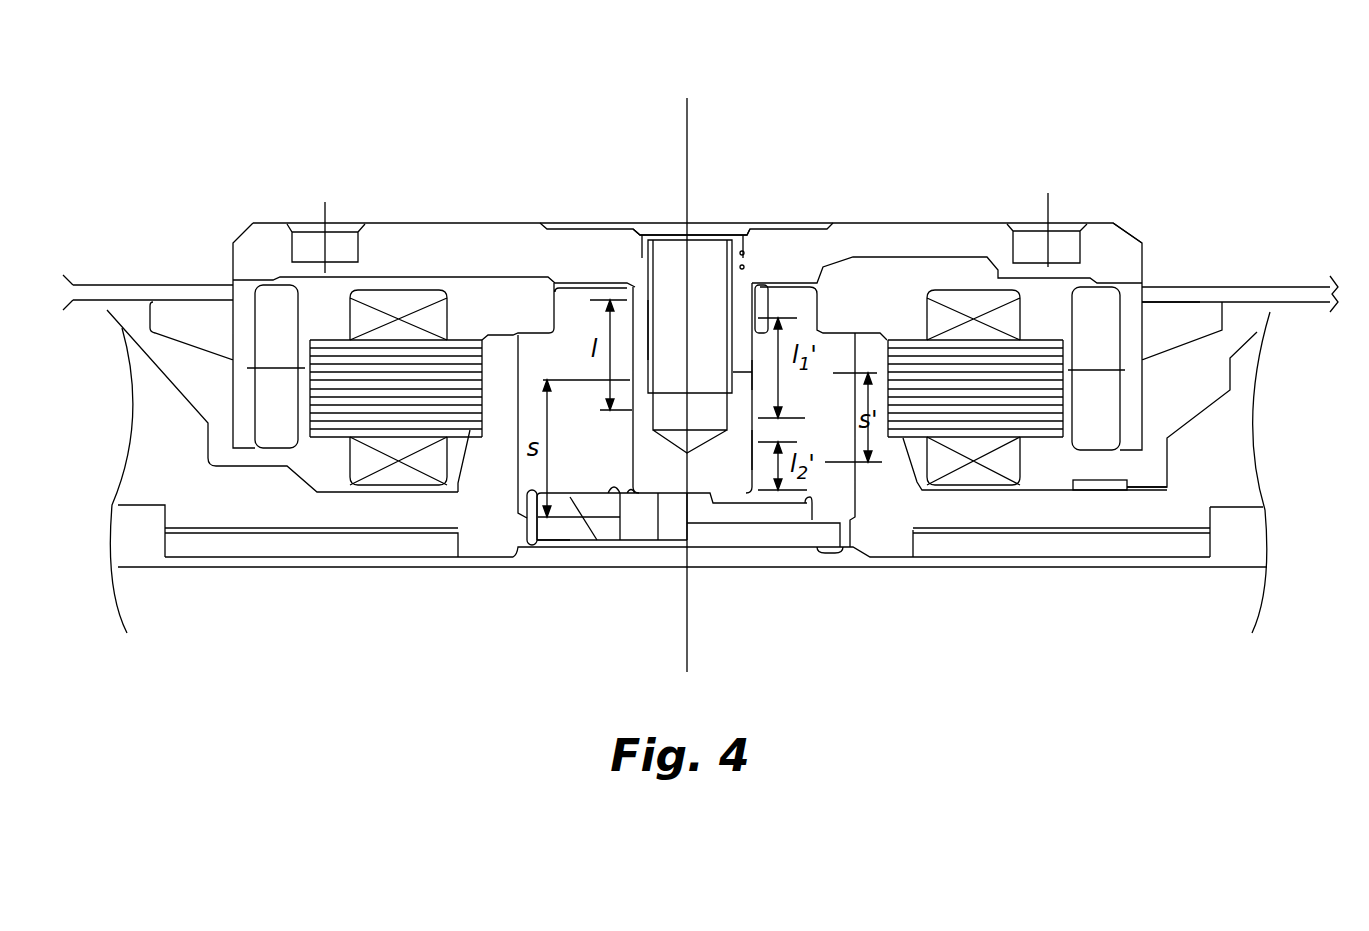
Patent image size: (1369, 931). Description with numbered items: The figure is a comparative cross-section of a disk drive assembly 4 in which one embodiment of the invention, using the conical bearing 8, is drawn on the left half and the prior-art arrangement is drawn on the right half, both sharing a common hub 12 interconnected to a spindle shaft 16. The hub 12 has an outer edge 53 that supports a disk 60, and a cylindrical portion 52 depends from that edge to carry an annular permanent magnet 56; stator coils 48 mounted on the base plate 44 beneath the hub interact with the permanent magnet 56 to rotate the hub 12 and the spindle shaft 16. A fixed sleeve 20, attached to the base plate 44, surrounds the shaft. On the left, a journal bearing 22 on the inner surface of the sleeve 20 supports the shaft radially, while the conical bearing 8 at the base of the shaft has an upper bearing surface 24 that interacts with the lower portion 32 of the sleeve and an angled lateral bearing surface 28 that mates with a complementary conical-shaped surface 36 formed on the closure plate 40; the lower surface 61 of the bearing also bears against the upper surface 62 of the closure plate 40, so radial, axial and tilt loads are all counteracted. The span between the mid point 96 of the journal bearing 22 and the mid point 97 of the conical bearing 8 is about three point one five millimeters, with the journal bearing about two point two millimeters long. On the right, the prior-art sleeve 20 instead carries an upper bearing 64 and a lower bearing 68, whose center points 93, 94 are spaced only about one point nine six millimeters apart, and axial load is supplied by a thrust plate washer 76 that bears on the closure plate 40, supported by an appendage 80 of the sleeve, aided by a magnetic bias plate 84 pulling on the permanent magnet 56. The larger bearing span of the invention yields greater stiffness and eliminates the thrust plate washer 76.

The disk drive assembly 4 is at (356, 116).
The conical bearing 8 is at (610, 527).
The hub 12 is at (265, 237).
The spindle shaft 16 is at (735, 255).
The sleeve 20 is at (535, 430).
The journal bearing 22 is at (672, 336).
The upper bearing surface 24 is at (620, 532).
The lateral bearing surface 28 is at (593, 533).
The lower portion of the sleeve 32 is at (562, 540).
The complementary conical-shaped surface 36 is at (558, 533).
The closure plate 40 is at (557, 541).
The base plate 44 is at (207, 500).
The stator coils 48 is at (340, 408).
The cylindrical portion 52 is at (1128, 297).
The outer edge 53 is at (1142, 255).
The permanent magnet 56 is at (273, 307).
The disk 60 is at (1258, 295).
The lower surface of the conical bearing 61 is at (642, 534).
The upper surface of the closing plate 62 is at (658, 545).
The upper bearing 64 is at (767, 333).
The lower bearing 68 is at (753, 443).
The thrust plate washer 76 is at (750, 510).
The appendage 80 is at (840, 552).
The magnetic bias plate 84 is at (1097, 490).
The center point of the upper journal bearing 93 is at (753, 373).
The center point of the lower journal bearing 94 is at (760, 460).
The mid point of the journal bearing 96 is at (633, 358).
The mid point of the conical bearing 97 is at (567, 528).